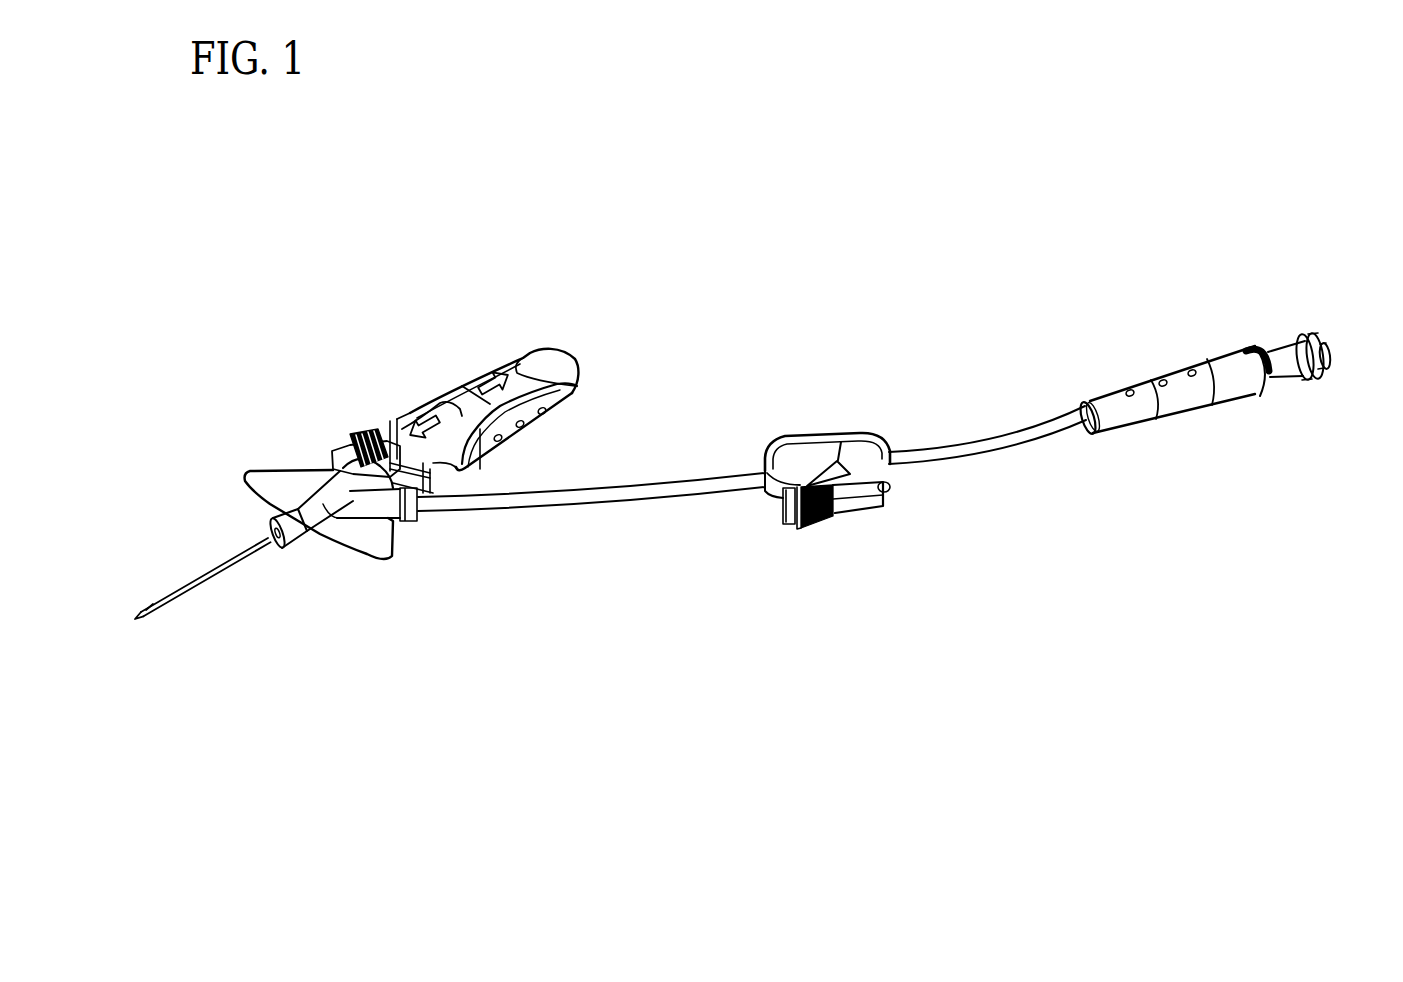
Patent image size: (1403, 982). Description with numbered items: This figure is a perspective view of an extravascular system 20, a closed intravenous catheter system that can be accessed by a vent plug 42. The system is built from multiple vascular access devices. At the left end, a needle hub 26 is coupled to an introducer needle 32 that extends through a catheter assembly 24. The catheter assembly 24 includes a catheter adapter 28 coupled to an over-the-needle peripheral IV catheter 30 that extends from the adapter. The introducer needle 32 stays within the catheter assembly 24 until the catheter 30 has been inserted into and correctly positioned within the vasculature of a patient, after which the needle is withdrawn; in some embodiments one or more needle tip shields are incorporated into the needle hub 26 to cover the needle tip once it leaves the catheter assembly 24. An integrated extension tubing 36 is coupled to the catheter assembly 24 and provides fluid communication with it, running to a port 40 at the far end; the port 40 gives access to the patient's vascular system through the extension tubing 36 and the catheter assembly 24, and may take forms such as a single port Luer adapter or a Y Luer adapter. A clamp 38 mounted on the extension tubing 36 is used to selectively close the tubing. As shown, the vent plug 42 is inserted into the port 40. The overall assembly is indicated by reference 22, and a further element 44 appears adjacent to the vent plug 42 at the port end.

The extravascular system 20 is at (676, 212).
The catheter assembly 22 is at (256, 376).
The catheter assembly 24 is at (295, 405).
The needle hub 26 is at (477, 313).
The catheter adapter 28 is at (330, 560).
The catheter 30 is at (219, 571).
The introducer needle 32 is at (138, 618).
The extension tubing 36 is at (982, 447).
The clamp 38 is at (847, 503).
The port 40 is at (1227, 375).
The vent plug 42 is at (1276, 343).
The cap 44 is at (1332, 352).